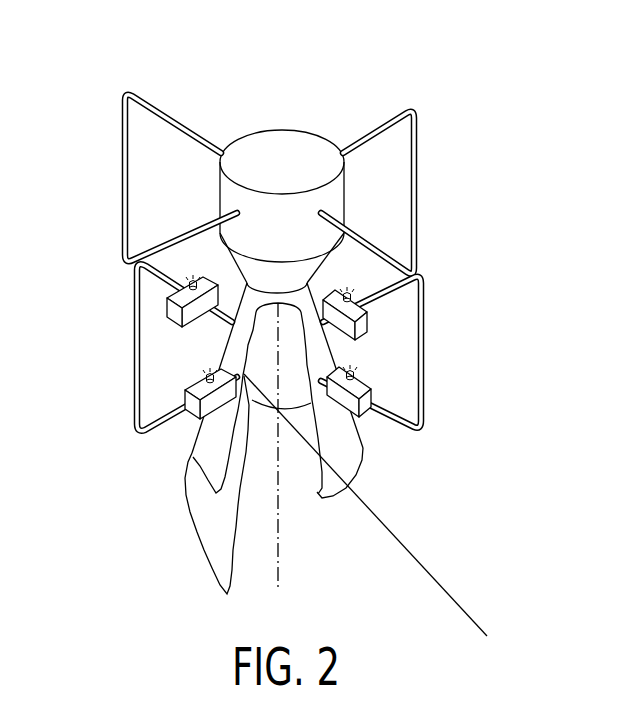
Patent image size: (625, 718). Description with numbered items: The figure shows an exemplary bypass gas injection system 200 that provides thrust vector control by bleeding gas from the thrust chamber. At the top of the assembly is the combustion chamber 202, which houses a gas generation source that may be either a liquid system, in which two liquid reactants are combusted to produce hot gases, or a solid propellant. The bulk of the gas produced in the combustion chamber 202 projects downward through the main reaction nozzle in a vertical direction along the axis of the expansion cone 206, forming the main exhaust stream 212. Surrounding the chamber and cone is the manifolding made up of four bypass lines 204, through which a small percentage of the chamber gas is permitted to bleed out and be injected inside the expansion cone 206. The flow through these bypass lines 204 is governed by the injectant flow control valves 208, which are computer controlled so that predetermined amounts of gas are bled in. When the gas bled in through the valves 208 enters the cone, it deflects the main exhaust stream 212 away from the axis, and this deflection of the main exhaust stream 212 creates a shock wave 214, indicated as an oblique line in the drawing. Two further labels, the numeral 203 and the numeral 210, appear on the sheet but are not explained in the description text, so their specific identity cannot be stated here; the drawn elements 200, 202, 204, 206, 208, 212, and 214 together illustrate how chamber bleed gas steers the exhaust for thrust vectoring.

The bypass gas injection system 200 is at (179, 77).
The combustion chamber 202 is at (337, 190).
The inner support frame 203 is at (387, 428).
The bypass lines 204 is at (418, 195).
The expansion cone 206 is at (228, 344).
The injectant flow control valves 208 is at (215, 405).
The flexible skirt 210 is at (222, 576).
The main exhaust stream 212 is at (279, 566).
The shock wave 214 is at (437, 581).